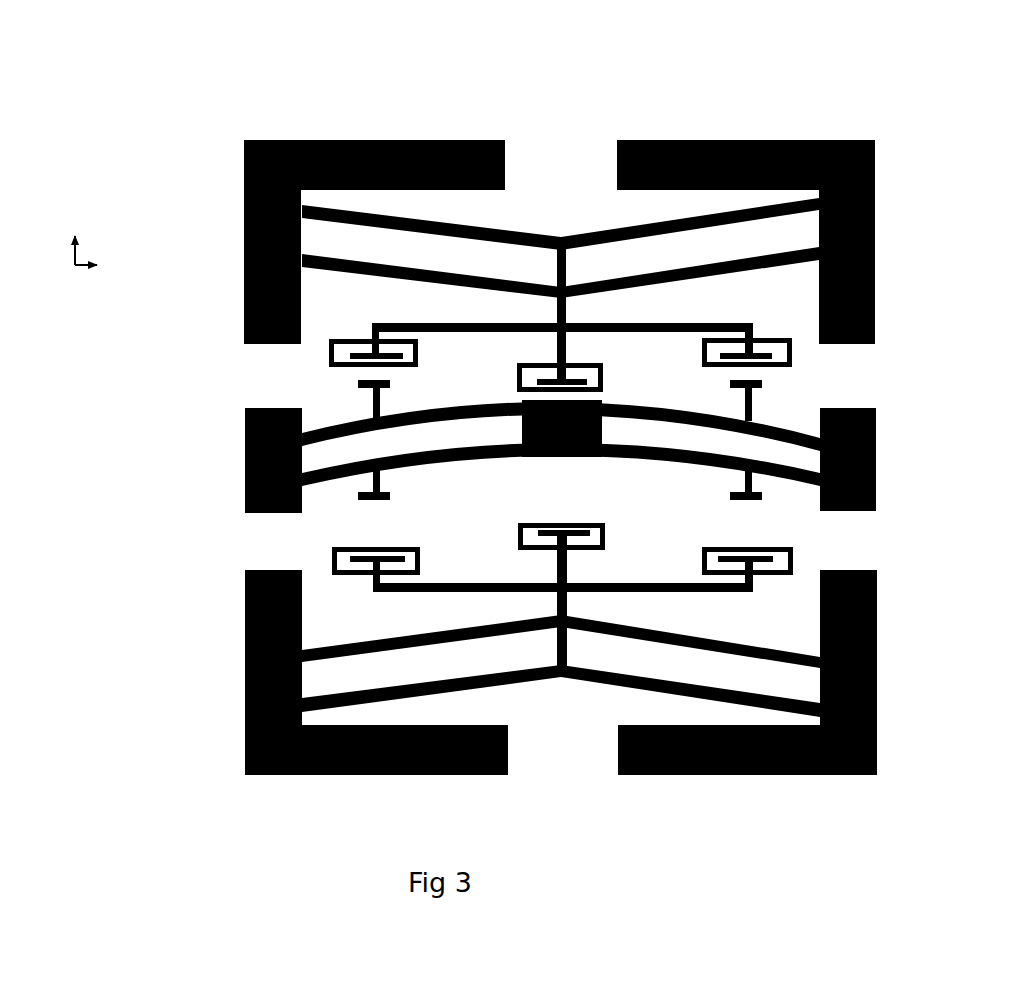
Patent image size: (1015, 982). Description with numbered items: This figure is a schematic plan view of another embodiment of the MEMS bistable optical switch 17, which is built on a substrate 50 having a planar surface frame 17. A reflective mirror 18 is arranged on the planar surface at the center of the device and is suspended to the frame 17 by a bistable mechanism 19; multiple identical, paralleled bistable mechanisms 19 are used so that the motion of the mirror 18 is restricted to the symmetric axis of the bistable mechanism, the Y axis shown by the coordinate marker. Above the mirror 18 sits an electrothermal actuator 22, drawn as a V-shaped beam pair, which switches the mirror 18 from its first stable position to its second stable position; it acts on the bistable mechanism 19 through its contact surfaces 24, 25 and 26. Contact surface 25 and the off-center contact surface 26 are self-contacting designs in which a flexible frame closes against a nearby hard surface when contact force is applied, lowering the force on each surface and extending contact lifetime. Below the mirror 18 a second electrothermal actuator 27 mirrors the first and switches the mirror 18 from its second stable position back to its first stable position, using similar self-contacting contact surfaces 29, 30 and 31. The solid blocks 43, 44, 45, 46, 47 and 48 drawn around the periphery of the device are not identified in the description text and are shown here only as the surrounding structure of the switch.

The planar surface frame 17 is at (441, 118).
The substrate 50 is at (571, 140).
The electrothermal actuator 22 is at (613, 220).
The upper left anchor block 43 is at (244, 285).
The upper right anchor block 46 is at (885, 252).
The middle left anchor block 44 is at (228, 453).
The middle right anchor block 47 is at (900, 462).
The lower left anchor block 45 is at (240, 638).
The lower right anchor block 48 is at (900, 660).
The contact surface 24 is at (394, 361).
The contact surface 25 is at (579, 380).
The off-center contact surface 26 is at (753, 371).
The bistable mechanism 19 is at (352, 422).
The reflective mirror 18 is at (530, 460).
The self-contacting contact surface 29 is at (376, 542).
The self-contacting contact surface 30 is at (564, 529).
The self-contacting contact surface 31 is at (747, 542).
The electrothermal actuator 27 is at (625, 683).